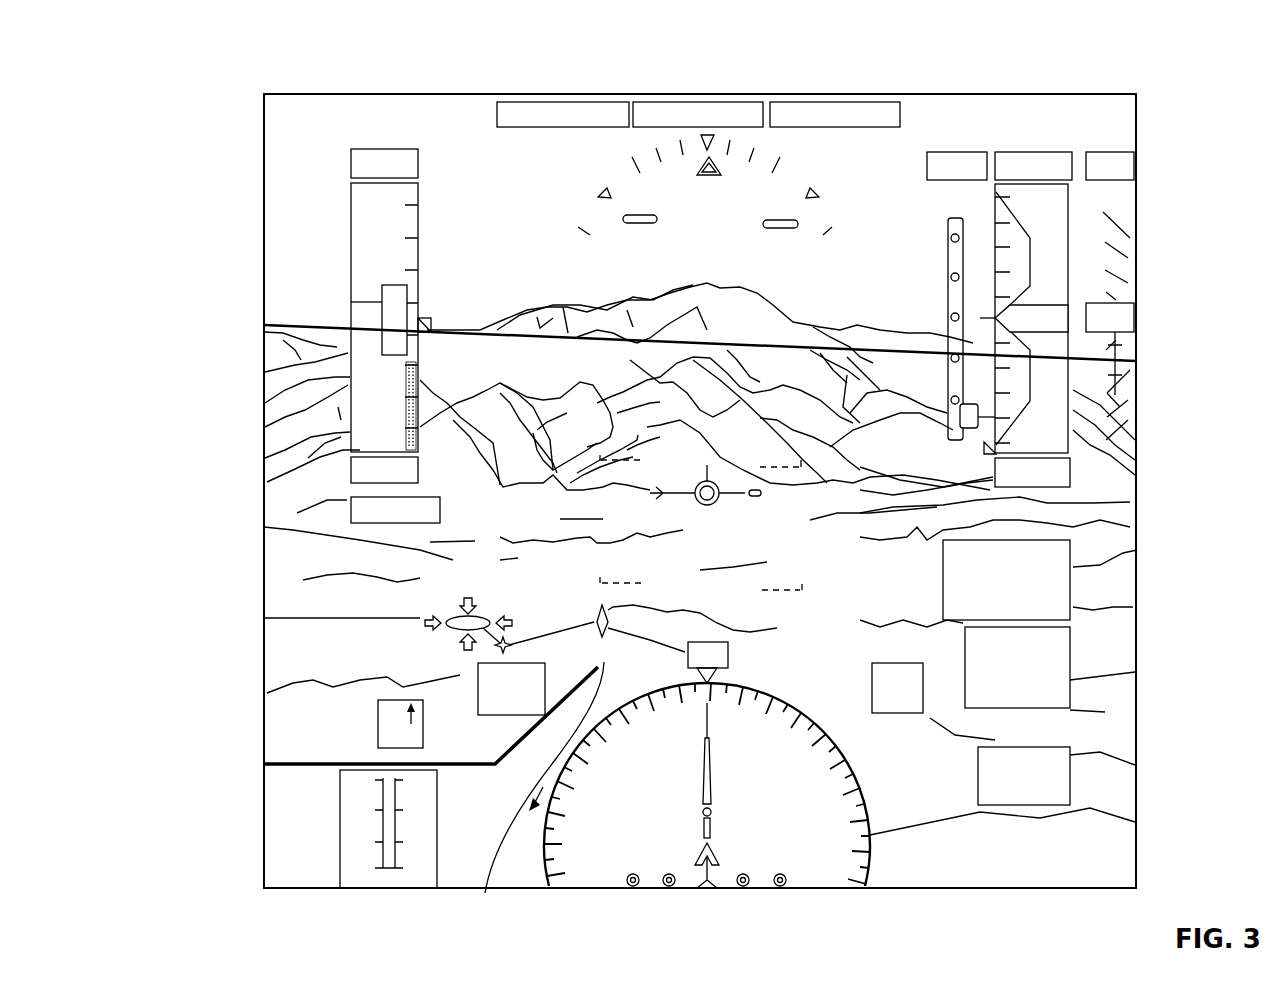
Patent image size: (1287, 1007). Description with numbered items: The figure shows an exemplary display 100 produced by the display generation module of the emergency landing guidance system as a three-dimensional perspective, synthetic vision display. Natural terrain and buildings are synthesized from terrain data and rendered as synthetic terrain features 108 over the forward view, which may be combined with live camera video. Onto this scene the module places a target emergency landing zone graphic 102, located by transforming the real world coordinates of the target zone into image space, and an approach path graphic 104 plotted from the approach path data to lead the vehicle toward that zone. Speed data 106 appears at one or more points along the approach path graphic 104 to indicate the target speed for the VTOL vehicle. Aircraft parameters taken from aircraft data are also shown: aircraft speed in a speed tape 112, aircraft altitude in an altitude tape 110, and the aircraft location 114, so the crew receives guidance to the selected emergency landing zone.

The display 100 is at (229, 58).
The target emergency landing zone graphic 102 is at (460, 619).
The approach path graphic 104 is at (553, 632).
The speed data 106 is at (485, 893).
The synthetic terrain features 108 is at (842, 345).
The altitude tape 110 is at (1073, 430).
The speed tape 112 is at (361, 437).
The aircraft location 114 is at (703, 888).